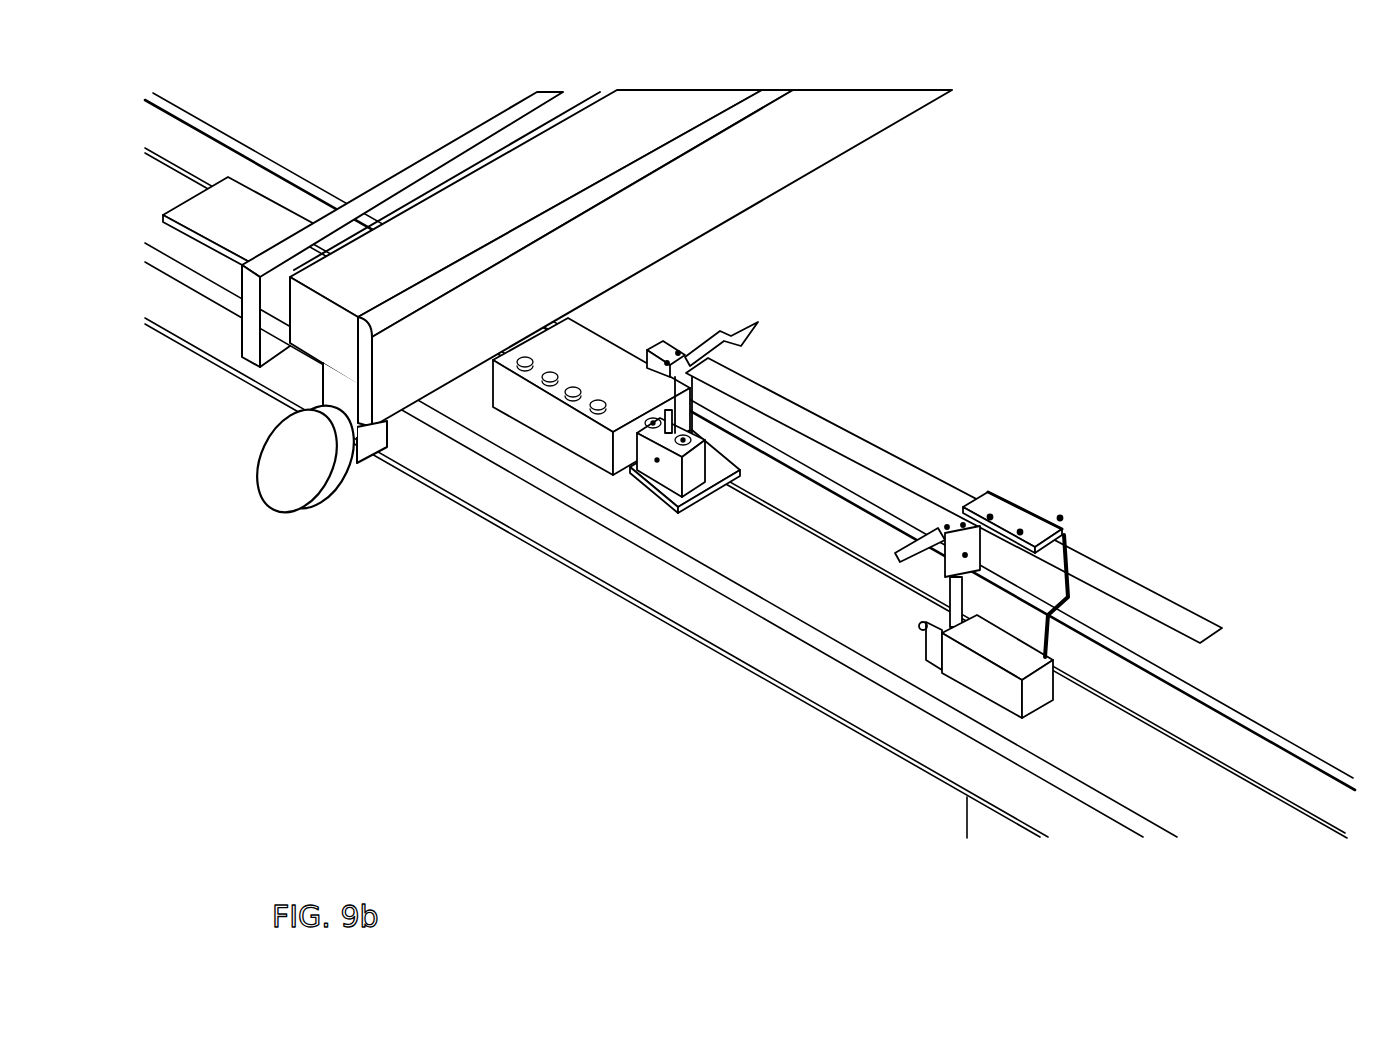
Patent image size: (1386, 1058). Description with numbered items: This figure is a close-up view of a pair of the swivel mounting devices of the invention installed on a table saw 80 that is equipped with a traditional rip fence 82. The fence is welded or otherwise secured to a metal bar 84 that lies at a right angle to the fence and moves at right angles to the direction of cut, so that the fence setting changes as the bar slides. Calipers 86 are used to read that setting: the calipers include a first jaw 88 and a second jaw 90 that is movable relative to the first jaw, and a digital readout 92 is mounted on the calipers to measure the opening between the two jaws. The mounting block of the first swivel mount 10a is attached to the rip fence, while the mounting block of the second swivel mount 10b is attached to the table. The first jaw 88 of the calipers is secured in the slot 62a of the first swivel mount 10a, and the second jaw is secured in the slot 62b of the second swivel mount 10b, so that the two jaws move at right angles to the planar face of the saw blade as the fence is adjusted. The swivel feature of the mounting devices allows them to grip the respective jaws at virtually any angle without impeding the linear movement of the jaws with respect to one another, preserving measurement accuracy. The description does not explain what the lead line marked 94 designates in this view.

The table saw 80 is at (298, 517).
The rip fence 82 is at (805, 123).
The metal bar 84 is at (241, 311).
The calipers 86 is at (954, 500).
The first jaw 88 is at (701, 398).
The second jaw 90 is at (908, 619).
The digital readout 92 is at (678, 349).
The support surface 94 is at (1047, 260).
The first swivel mount 10a is at (574, 469).
The slot of the first swivel mount 62a is at (606, 479).
The second swivel mount 10b is at (862, 674).
The slot of the second swivel mount 62b is at (835, 655).